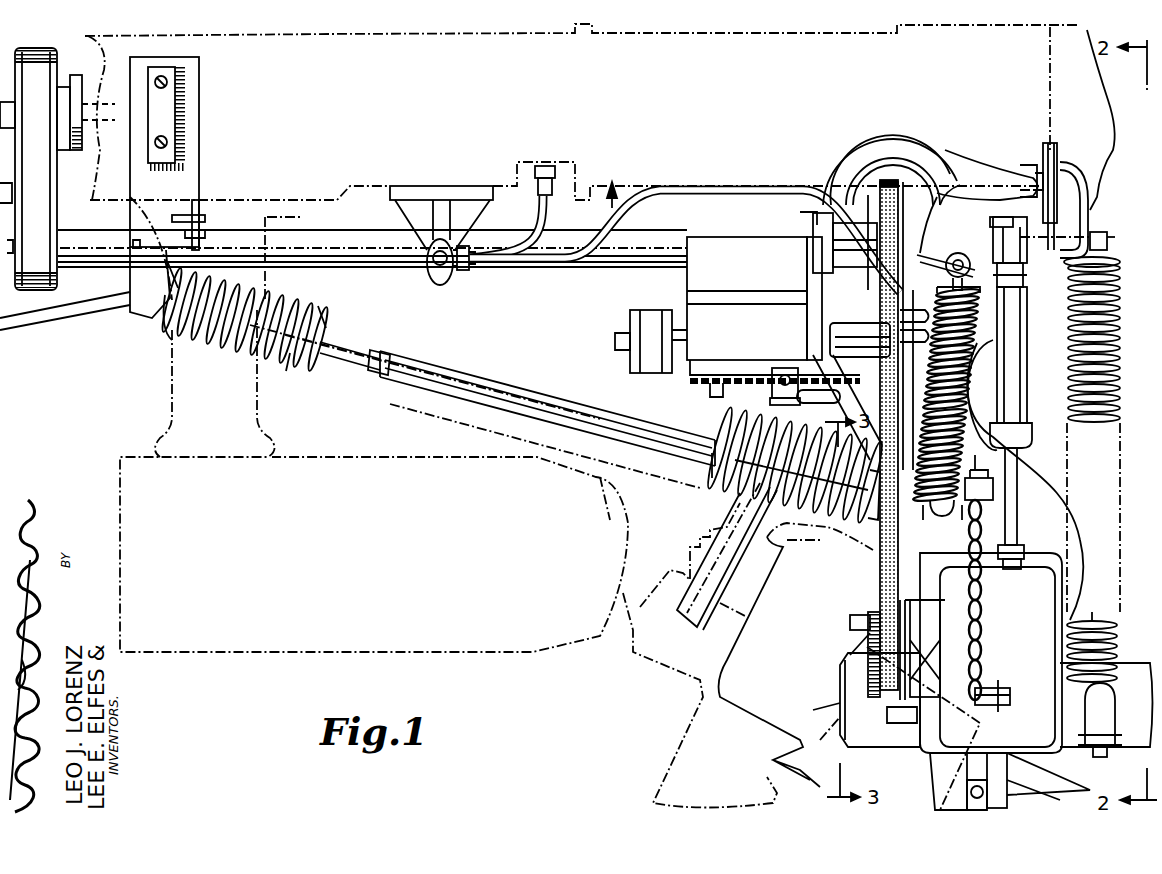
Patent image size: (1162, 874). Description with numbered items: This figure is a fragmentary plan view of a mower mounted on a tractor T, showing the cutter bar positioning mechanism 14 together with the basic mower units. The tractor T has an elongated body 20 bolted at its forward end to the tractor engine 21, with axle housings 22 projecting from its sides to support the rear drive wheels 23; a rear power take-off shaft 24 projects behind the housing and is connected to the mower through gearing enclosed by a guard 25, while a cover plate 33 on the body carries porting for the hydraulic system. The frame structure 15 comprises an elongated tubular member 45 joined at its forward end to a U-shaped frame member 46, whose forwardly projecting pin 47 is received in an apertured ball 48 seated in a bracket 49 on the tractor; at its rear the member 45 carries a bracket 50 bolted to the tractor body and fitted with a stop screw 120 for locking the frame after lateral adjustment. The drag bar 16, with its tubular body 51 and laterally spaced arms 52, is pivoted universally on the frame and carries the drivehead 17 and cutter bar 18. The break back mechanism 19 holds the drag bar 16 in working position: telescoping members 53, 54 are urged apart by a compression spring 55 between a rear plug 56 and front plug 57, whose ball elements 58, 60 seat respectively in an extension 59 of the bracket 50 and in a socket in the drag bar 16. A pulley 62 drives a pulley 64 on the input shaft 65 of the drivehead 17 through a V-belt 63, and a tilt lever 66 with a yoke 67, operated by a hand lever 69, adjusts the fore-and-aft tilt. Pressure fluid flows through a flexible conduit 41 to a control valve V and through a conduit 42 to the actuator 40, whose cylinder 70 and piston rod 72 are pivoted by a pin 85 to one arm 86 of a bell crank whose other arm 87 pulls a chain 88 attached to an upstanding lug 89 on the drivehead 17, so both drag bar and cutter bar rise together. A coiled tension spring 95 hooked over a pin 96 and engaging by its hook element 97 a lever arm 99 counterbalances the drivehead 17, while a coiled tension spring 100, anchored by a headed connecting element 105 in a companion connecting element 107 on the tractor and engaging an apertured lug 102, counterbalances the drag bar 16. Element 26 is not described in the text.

The cutter bar positioning mechanism 14 is at (1035, 440).
The frame structure 15 is at (842, 150).
The drag bar 16 is at (1062, 505).
The drivehead 17 is at (1064, 578).
The cutter bar 18 is at (1025, 788).
The spring-loaded break back mechanism 19 is at (715, 480).
The tractor body 20 is at (735, 196).
The tractor engine 21 is at (1112, 112).
The axle housings 22 is at (160, 398).
The rear drive wheels 23 is at (385, 455).
The rear power take-off shaft 24 is at (110, 102).
The guard 25 is at (40, 213).
The rod 26 is at (50, 322).
The cover plate 33 is at (372, 202).
The pressure fluid operated actuator 40 is at (1027, 355).
The flexible conduit 41 is at (535, 220).
The flexible conduit 42 is at (605, 245).
The tubular frame member 45 is at (370, 268).
The U-shaped frame member 46 is at (942, 158).
The forwardly projecting pin 47 is at (1040, 175).
The ball 48 is at (1048, 143).
The bracket 49 is at (1068, 160).
The bracket 50 is at (185, 173).
The tubular body 51 is at (975, 422).
The laterally spaced arms 52 is at (935, 603).
The inner telescoping member 53 is at (357, 360).
The outer telescoping member 54 is at (552, 395).
The compression spring 55 is at (287, 372).
The rear plug 56 is at (170, 340).
The front plug 57 is at (837, 547).
The ball element 58 is at (160, 330).
The bracket extension 59 is at (145, 285).
The ball element 60 is at (870, 550).
The pulley 62 is at (895, 182).
The V-belt 63 is at (885, 180).
The pulley 64 is at (865, 650).
The input shaft 65 is at (850, 622).
The tilt lever 66 is at (815, 333).
The yoke 67 is at (850, 323).
The hand lever 69 is at (772, 401).
The cylinder 70 is at (1020, 362).
The piston rod 72 is at (1017, 478).
The pin 85 is at (1025, 570).
The bell crank arm 86 is at (1024, 550).
The bell crank arm 87 is at (978, 470).
The chain 88 is at (990, 668).
The upstanding lug 89 is at (1008, 697).
The coiled tension spring 95 is at (1122, 385).
The pin 96 is at (1107, 240).
The hook element 97 is at (1118, 705).
The lever arm 99 is at (1100, 757).
The coiled tension spring 100 is at (968, 388).
The apertured lug 102 is at (942, 520).
The headed connecting element 105 is at (947, 280).
The companion connecting element 107 is at (978, 262).
The stop screw 120 is at (205, 232).
The tractor T is at (630, 206).
The control valve V is at (445, 284).